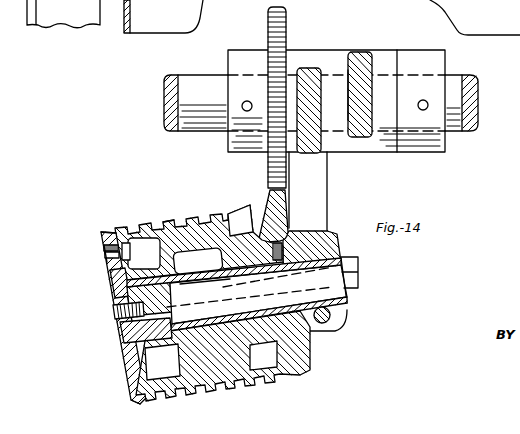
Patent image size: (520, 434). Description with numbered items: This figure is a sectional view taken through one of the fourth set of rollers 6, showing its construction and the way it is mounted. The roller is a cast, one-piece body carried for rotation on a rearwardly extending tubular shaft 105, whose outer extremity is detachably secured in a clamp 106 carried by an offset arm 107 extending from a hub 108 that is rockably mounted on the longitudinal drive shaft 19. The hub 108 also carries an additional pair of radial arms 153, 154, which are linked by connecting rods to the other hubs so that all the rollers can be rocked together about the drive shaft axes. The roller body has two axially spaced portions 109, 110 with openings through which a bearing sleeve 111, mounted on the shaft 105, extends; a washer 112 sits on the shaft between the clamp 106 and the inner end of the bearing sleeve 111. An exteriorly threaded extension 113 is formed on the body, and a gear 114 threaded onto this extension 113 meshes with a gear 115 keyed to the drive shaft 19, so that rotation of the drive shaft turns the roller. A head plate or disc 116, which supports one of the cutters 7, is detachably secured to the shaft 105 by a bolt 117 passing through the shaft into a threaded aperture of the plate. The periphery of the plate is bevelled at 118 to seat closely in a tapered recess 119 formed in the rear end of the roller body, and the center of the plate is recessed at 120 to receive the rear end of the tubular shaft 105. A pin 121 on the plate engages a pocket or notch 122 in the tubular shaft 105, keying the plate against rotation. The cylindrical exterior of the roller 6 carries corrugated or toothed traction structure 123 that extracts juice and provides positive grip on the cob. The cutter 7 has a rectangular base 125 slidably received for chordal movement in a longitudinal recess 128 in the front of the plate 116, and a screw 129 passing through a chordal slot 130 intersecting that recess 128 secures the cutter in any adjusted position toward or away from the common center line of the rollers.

The roller 6 is at (207, 207).
The cutter 7 is at (104, 269).
The longitudinal shaft 19 is at (478, 90).
The tubular shaft 105 is at (343, 291).
The clamp 106 is at (340, 311).
The arm 107 is at (325, 180).
The hub 108 is at (335, 50).
The axially spaced portion 109 is at (137, 248).
The axially spaced portion 110 is at (243, 258).
The bearing sleeve 111 is at (196, 272).
The washer 112 is at (287, 262).
The threaded extension 113 is at (265, 266).
The gear 114 is at (270, 200).
The gear 115 is at (270, 26).
The head plate 116 is at (118, 355).
The bolt 117 is at (117, 310).
The bevelled periphery 118 is at (137, 387).
The tapered recess 119 is at (138, 405).
The recess 120 is at (113, 286).
The pin 121 is at (120, 333).
The notch 122 is at (148, 350).
The traction structure 123 is at (168, 215).
The rectangular base 125 is at (102, 231).
The longitudinal recess 128 is at (110, 280).
The screw 129 is at (106, 244).
The chordal slot 130 is at (108, 256).
The radial arm 153 is at (368, 60).
The radial arm 154 is at (306, 66).